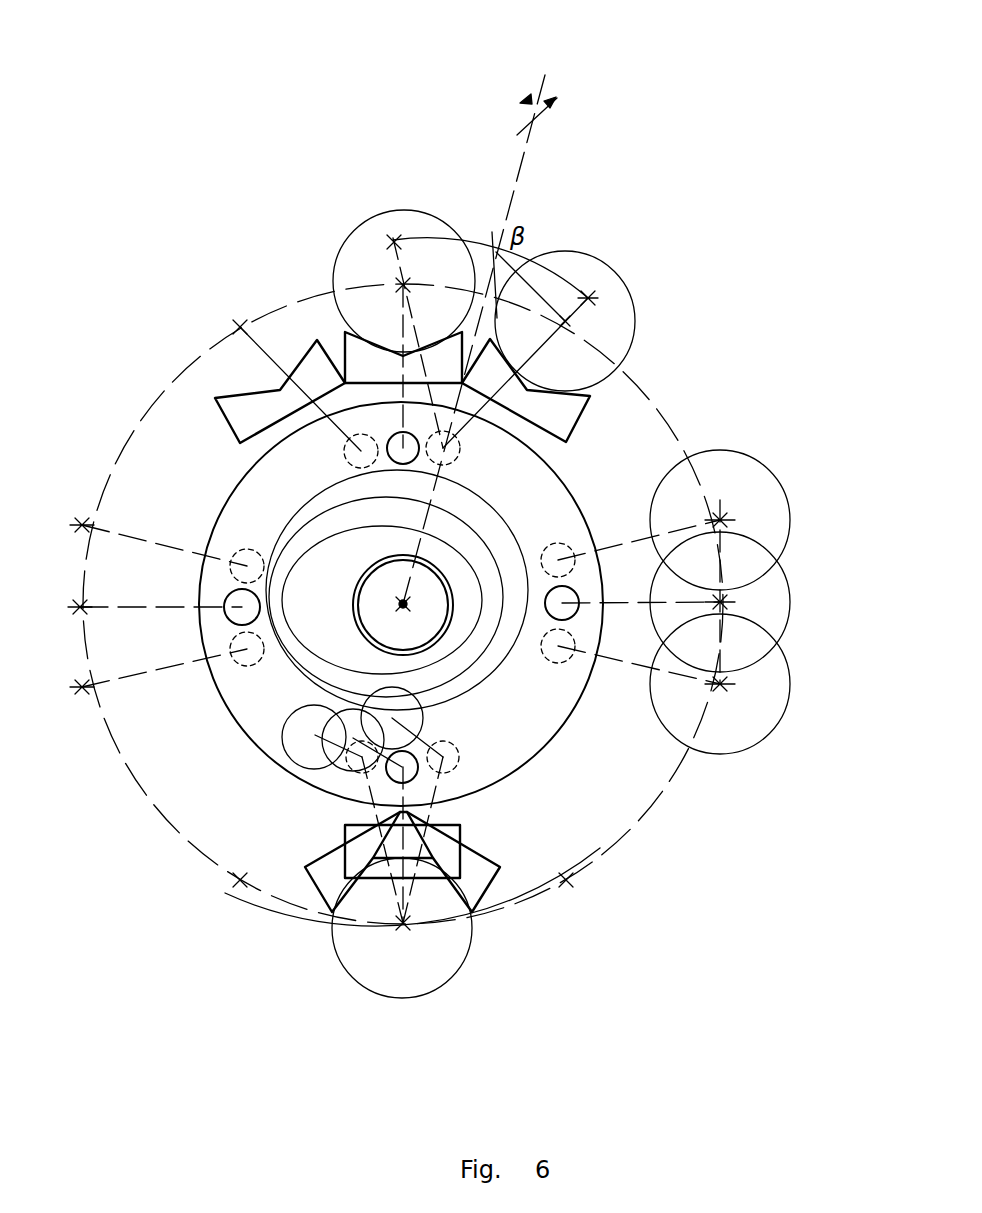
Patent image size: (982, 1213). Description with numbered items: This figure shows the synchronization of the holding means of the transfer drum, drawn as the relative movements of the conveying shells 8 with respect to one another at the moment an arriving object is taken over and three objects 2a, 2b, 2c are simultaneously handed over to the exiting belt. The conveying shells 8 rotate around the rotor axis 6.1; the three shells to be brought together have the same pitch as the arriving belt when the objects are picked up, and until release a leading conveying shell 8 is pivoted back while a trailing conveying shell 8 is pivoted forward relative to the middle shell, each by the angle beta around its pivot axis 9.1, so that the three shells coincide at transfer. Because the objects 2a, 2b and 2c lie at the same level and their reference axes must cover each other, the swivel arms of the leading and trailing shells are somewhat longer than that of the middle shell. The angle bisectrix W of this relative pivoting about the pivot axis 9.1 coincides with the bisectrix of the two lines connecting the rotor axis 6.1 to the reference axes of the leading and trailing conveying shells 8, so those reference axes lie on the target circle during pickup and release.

The object 2a is at (580, 251).
The object 2b is at (406, 208).
The object 2c is at (783, 486).
The conveying shell 8 is at (247, 410).
The pivot axis 9.1 is at (443, 448).
The rotor axis 6.1 is at (403, 604).
The angle bisectrix W is at (514, 184).